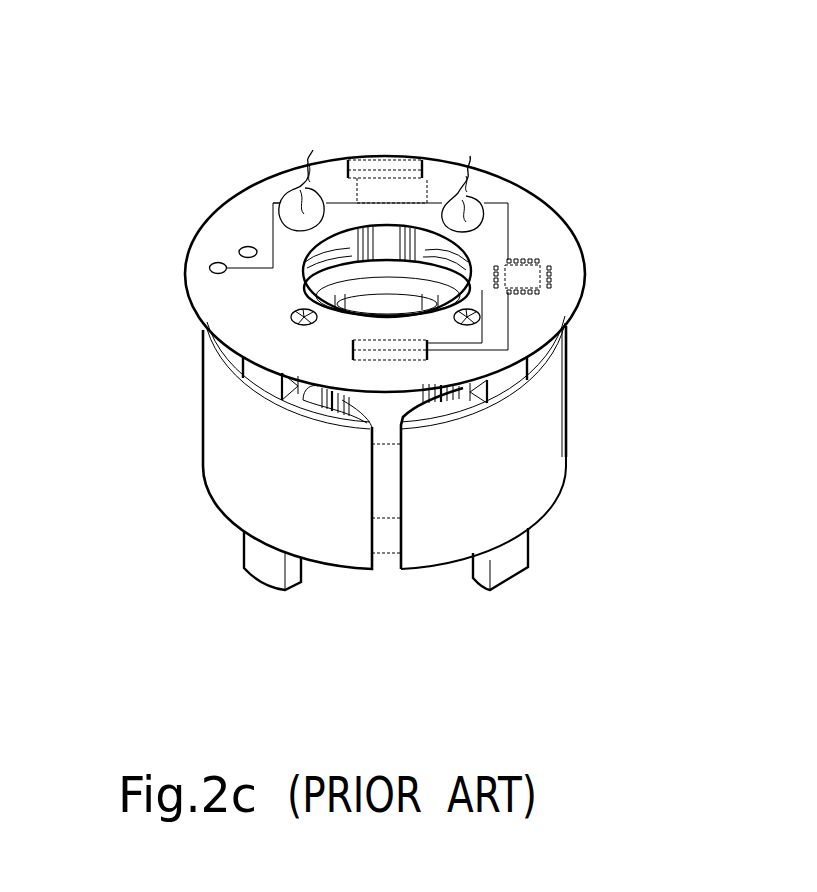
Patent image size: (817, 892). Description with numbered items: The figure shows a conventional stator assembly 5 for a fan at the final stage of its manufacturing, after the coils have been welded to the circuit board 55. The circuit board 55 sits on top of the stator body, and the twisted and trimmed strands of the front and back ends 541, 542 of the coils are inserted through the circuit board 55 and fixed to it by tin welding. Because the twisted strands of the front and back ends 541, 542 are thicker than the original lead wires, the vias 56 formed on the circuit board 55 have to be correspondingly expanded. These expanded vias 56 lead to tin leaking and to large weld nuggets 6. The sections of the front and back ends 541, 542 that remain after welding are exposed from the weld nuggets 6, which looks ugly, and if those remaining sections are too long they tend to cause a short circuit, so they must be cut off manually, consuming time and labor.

The stator assembly 5 is at (443, 302).
The circuit board 55 is at (553, 305).
The vias 56 is at (297, 312).
The front end of the coil 541 is at (318, 150).
The back end of the coil 542 is at (467, 173).
The weld nuggets 6 is at (280, 190).